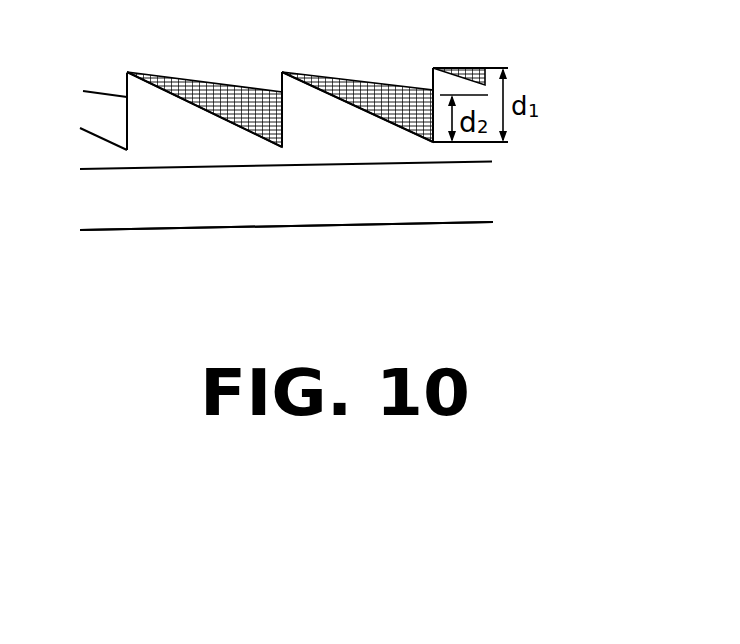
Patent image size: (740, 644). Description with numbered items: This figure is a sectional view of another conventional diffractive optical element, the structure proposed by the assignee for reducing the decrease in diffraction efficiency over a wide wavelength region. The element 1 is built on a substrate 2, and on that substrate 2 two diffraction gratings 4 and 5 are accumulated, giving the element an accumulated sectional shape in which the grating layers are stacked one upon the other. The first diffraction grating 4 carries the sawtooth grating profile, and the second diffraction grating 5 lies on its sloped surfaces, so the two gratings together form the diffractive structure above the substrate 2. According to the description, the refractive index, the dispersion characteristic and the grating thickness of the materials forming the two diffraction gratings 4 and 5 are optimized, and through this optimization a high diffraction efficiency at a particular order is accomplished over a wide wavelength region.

The substrate 1 is at (553, 110).
The substrate 2 is at (360, 208).
The diffraction grating 4 is at (175, 130).
The diffraction grating 5 is at (372, 83).